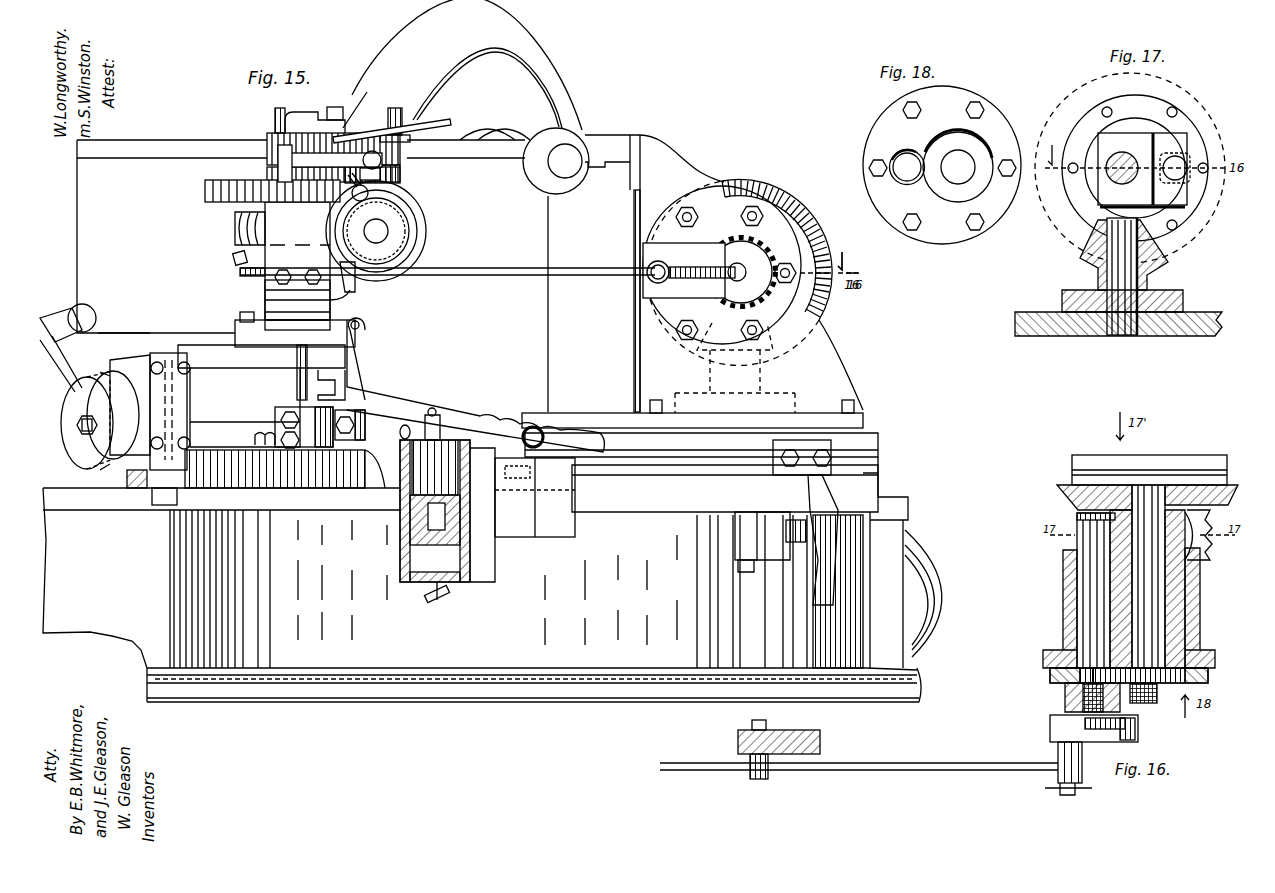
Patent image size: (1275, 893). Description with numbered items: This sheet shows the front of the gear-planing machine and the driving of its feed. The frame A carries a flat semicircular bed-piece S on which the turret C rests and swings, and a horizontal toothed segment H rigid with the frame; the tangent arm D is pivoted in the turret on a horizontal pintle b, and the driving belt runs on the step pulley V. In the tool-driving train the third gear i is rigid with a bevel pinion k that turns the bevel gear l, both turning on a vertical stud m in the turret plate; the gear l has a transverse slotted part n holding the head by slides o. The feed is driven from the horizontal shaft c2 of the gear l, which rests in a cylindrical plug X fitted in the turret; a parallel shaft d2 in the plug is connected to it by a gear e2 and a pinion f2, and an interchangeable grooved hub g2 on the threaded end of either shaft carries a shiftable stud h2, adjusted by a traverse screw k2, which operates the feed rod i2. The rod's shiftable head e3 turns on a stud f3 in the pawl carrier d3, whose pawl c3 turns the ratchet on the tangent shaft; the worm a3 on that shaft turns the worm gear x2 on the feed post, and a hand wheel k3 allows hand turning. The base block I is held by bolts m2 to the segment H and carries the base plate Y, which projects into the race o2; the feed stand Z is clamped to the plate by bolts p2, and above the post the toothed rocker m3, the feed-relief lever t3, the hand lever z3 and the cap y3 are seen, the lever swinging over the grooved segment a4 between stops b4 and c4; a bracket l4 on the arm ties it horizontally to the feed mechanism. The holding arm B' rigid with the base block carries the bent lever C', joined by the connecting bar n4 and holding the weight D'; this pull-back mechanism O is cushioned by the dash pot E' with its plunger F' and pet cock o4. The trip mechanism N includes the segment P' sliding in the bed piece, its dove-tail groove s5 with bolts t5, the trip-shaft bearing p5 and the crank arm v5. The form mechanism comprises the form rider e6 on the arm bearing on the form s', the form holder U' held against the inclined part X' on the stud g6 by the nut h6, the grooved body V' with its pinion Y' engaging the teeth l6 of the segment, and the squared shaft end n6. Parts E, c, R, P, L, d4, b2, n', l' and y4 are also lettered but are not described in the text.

In FIG. 15, the arch frame E is at (467, 70).
In FIG. 15, the bearing boss c is at (581, 161).
In FIG. 15, the pintle b is at (565, 161).
In FIG. 15, the bracket R is at (682, 158).
In FIG. 15, the plug X is at (722, 265).
In FIG. 18, the plug X is at (939, 165).
In FIG. 17, the plug X is at (1135, 168).
In FIG. 16, the plug X is at (1164, 589).
In FIG. 15, the bevel gear l is at (739, 270).
In FIG. 17, the bevel gear l is at (1130, 168).
In FIG. 16, the bevel gear l is at (1155, 496).
In FIG. 15, the shaft c2 is at (741, 272).
In FIG. 17, the shaft c2 is at (1124, 175).
In FIG. 16, the shaft c2 is at (1148, 576).
In FIG. 15, the gear e2 is at (758, 267).
In FIG. 16, the gear e2 is at (1160, 692).
In FIG. 15, the grooved hub g2 is at (684, 270).
In FIG. 16, the grooved hub g2 is at (1065, 705).
In FIG. 15, the shiftable stud h2 is at (660, 262).
In FIG. 16, the shiftable stud h2 is at (1075, 796).
In FIG. 15, the traverse screw k2 is at (700, 266).
In FIG. 16, the traverse screw k2 is at (1100, 742).
In FIG. 15, the feed rod i2 is at (470, 276).
In FIG. 16, the feed rod i2 is at (900, 770).
In FIG. 15, the bevel pinion k is at (760, 352).
In FIG. 17, the bevel pinion k is at (1090, 238).
In FIG. 16, the bevel pinion k is at (1210, 550).
In FIG. 15, the third gear i is at (790, 403).
In FIG. 17, the third gear i is at (1183, 300).
In FIG. 16, the third gear i is at (1210, 525).
In FIG. 15, the turret C is at (721, 365).
In FIG. 17, the turret C is at (1118, 337).
In FIG. 16, the turret C is at (1124, 608).
In FIG. 15, the circular segment P' is at (715, 426).
In FIG. 15, the dove-tail groove s5 is at (715, 458).
In FIG. 15, the bed-piece S is at (725, 488).
In FIG. 15, the bolts t5 is at (802, 457).
In FIG. 15, the crank arm v5 is at (808, 540).
In FIG. 15, the bearing p5 is at (742, 533).
In FIG. 15, the trip mechanism N is at (777, 542).
In FIG. 15, the step pulley V is at (924, 593).
In FIG. 15, the frame A is at (482, 595).
In FIG. 15, the worm a3 is at (794, 717).
In FIG. 15, the circular toothed segment H is at (285, 453).
In FIG. 15, the teeth l6 is at (222, 478).
In FIG. 15, the pinion Y' is at (132, 485).
In FIG. 15, the squared part n6 is at (160, 505).
In FIG. 15, the inclined part X' is at (100, 420).
In FIG. 15, the stud g6 is at (70, 432).
In FIG. 15, the clamping nut h6 is at (80, 438).
In FIG. 15, the form holder U' is at (85, 463).
In FIG. 15, the form rider e6 is at (55, 315).
In FIG. 15, the form s' is at (61, 364).
In FIG. 15, the bracket P is at (130, 405).
In FIG. 15, the grooved body V' is at (170, 411).
In FIG. 15, the base plate Y is at (261, 372).
In FIG. 15, the base block I is at (245, 407).
In FIG. 15, the race o2 is at (312, 396).
In FIG. 15, the bolts m2 is at (268, 422).
In FIG. 15, the holding arm B' is at (360, 435).
In FIG. 15, the column L is at (297, 266).
In FIG. 15, the feed stand Z is at (300, 245).
In FIG. 15, the worm gear x2 is at (235, 225).
In FIG. 15, the bracket l4 is at (232, 255).
In FIG. 15, the grooved segment a4 is at (205, 189).
In FIG. 15, the rocker m3 is at (267, 172).
In FIG. 15, the stop b4 is at (292, 180).
In FIG. 15, the pin d4 is at (278, 152).
In FIG. 15, the feed-relief lever t3 is at (383, 160).
In FIG. 15, the stud b2 is at (405, 108).
In FIG. 15, the cap y3 is at (305, 116).
In FIG. 15, the block n' is at (336, 104).
In FIG. 15, the rod l' is at (358, 102).
In FIG. 15, the stop c4 is at (372, 151).
In FIG. 15, the hand lever z3 is at (440, 122).
In FIG. 15, the pawl c3 is at (368, 190).
In FIG. 15, the hand wheel k3 is at (416, 202).
In FIG. 15, the pawl carrier d3 is at (426, 231).
In FIG. 16, the pawl carrier d3 is at (790, 730).
In FIG. 15, the hub y4 is at (392, 222).
In FIG. 15, the shiftable head e3 is at (355, 290).
In FIG. 16, the shiftable head e3 is at (750, 776).
In FIG. 15, the clamping bolts p2 is at (240, 318).
In FIG. 15, the connecting bar n4 is at (300, 322).
In FIG. 15, the slides o is at (356, 321).
In FIG. 15, the bent lever C' is at (475, 385).
In FIG. 15, the pull-back mechanism O is at (469, 427).
In FIG. 15, the dash pot E' is at (456, 511).
In FIG. 15, the plunger F' is at (416, 520).
In FIG. 15, the weight D' is at (535, 497).
In FIG. 15, the pet cock o4 is at (445, 600).
In FIG. 15, the tangent arm D is at (138, 229).
In FIG. 17, the second shaft d2 is at (1175, 156).
In FIG. 16, the second shaft d2 is at (1096, 590).
In FIG. 17, the vertical stud m is at (1110, 283).
In FIG. 16, the slotted part n is at (1152, 462).
In FIG. 16, the pinion f2 is at (1090, 670).
In FIG. 16, the stud f3 is at (738, 742).